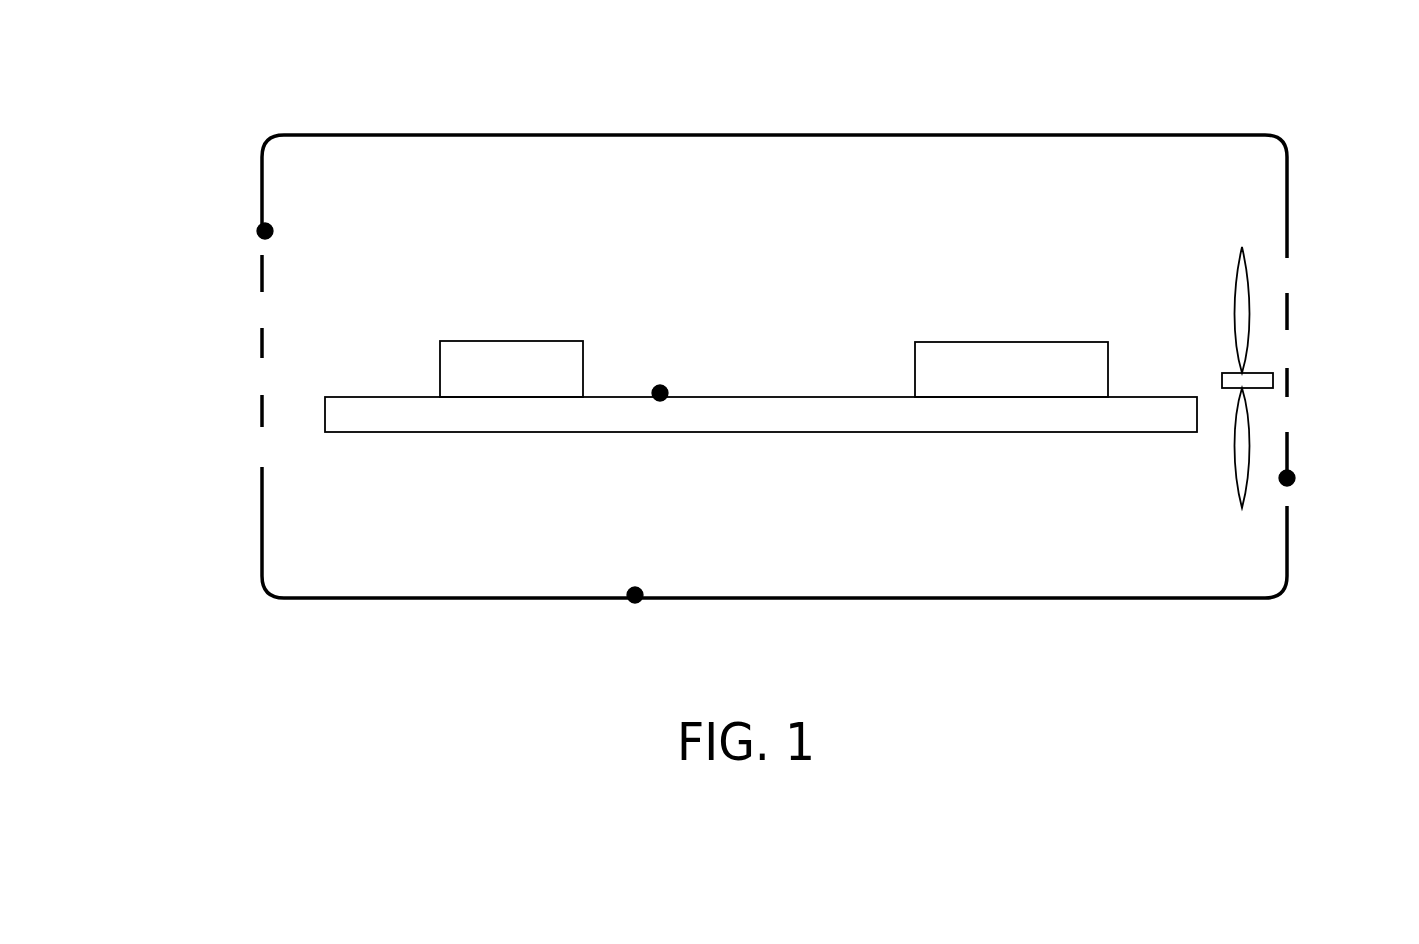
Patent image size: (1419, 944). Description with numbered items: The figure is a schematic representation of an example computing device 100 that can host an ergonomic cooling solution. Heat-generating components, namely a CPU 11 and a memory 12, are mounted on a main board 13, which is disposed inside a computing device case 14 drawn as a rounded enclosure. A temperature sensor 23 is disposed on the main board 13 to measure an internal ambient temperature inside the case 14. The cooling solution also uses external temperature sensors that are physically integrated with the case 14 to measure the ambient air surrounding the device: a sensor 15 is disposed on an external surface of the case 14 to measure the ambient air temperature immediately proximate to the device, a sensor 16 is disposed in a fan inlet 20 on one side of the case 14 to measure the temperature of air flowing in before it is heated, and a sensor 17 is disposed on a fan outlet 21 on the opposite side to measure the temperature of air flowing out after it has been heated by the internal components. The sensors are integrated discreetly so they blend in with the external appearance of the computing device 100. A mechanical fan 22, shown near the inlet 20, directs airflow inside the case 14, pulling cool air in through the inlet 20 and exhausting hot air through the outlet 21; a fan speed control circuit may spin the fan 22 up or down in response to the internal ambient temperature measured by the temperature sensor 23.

The computing device 100 is at (744, 687).
The computing device case 14 is at (584, 64).
The external temperature sensor 17 is at (262, 222).
The external temperature sensor 16 is at (1295, 476).
The external temperature sensor 15 is at (634, 603).
The temperature sensor 23 is at (662, 388).
The main board 13 is at (830, 426).
The memory 12 is at (565, 381).
The CPU 11 is at (1048, 379).
The mechanical fan 22 is at (1235, 268).
The fan inlet 20 is at (1306, 277).
The fan outlet 21 is at (256, 439).